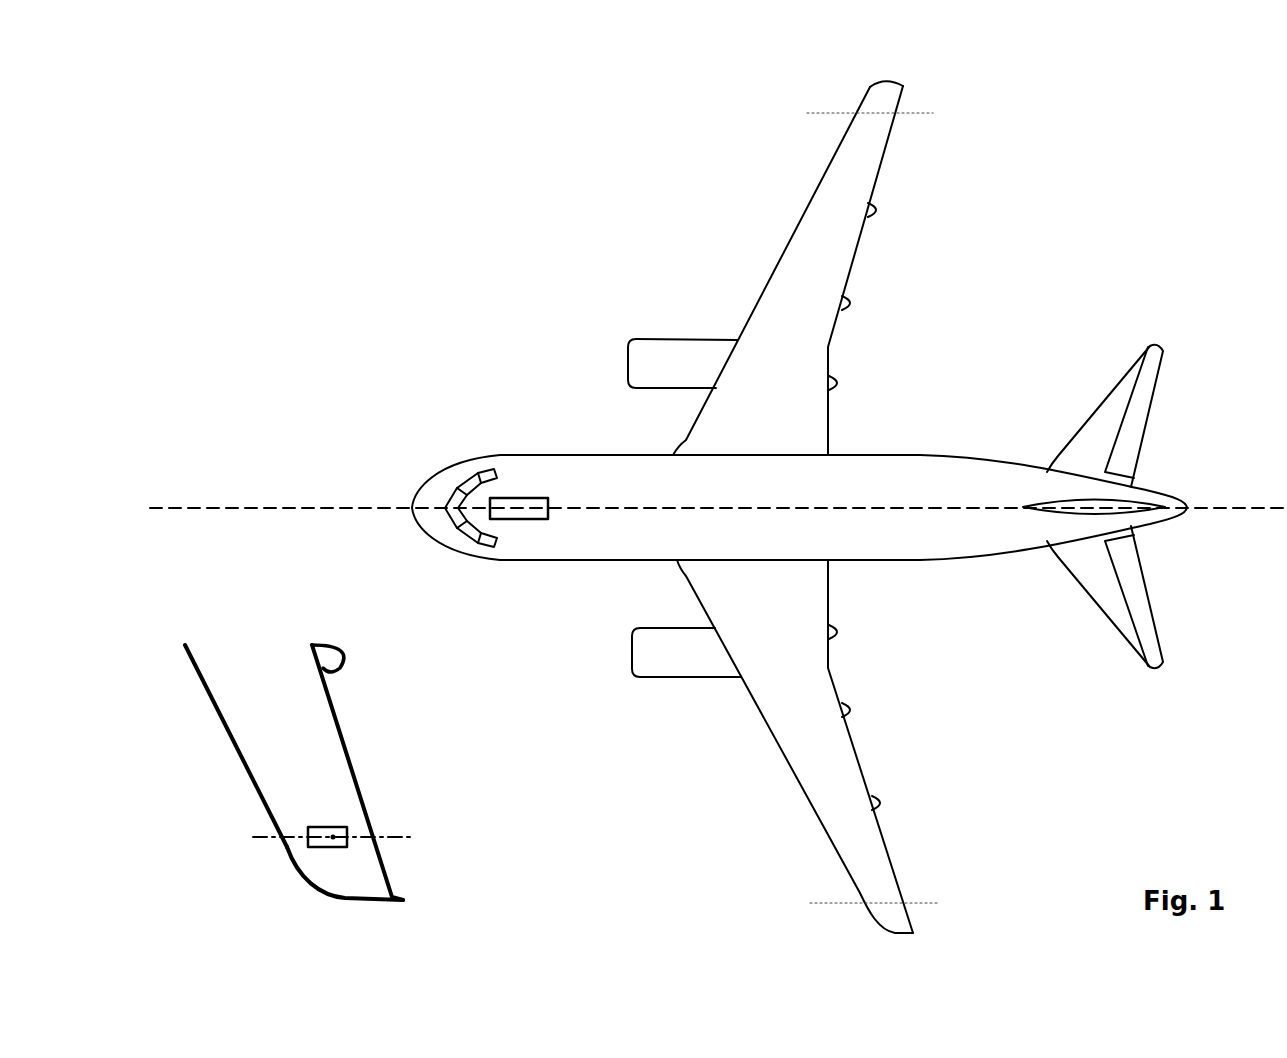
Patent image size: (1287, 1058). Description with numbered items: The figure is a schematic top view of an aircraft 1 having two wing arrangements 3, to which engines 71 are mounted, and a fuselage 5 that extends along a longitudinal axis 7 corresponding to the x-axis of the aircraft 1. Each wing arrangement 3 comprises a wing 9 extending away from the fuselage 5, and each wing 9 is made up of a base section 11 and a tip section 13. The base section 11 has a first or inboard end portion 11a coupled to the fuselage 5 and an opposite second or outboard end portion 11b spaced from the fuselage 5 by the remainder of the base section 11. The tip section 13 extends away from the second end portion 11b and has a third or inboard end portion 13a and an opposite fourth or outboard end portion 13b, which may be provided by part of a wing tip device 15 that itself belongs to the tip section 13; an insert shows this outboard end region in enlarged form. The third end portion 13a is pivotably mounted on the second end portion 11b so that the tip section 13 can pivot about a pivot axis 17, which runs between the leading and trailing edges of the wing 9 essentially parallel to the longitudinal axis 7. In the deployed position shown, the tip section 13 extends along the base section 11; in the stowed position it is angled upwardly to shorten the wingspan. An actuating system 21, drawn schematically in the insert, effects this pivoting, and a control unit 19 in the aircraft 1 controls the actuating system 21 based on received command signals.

The aircraft 1 is at (1109, 228).
The wing arrangement 3 is at (718, 196).
The fuselage 5 is at (968, 558).
The longitudinal axis 7 is at (188, 508).
The wing 9 is at (766, 283).
The base section 11 is at (828, 272).
The first end portion 11a is at (805, 444).
The second end portion 11b is at (893, 122).
The tip section 13 is at (888, 94).
The third end portion 13a is at (273, 859).
The fourth end portion 13b is at (432, 900).
The wing tip device 15 is at (910, 80).
The pivot axis 17 is at (937, 902).
The control unit 19 is at (512, 498).
The actuating system 21 is at (337, 826).
The engine 71 is at (655, 350).